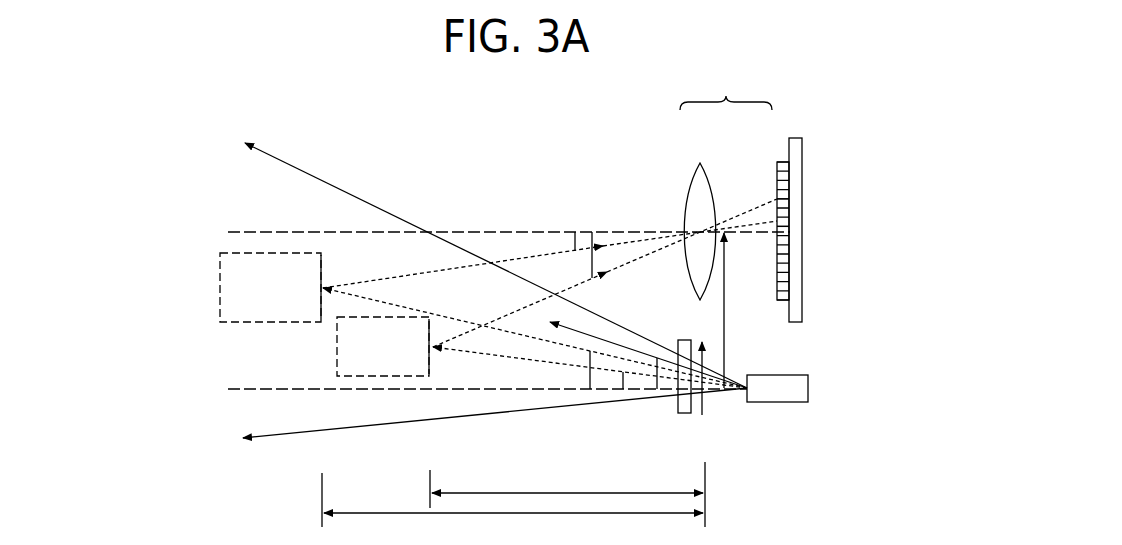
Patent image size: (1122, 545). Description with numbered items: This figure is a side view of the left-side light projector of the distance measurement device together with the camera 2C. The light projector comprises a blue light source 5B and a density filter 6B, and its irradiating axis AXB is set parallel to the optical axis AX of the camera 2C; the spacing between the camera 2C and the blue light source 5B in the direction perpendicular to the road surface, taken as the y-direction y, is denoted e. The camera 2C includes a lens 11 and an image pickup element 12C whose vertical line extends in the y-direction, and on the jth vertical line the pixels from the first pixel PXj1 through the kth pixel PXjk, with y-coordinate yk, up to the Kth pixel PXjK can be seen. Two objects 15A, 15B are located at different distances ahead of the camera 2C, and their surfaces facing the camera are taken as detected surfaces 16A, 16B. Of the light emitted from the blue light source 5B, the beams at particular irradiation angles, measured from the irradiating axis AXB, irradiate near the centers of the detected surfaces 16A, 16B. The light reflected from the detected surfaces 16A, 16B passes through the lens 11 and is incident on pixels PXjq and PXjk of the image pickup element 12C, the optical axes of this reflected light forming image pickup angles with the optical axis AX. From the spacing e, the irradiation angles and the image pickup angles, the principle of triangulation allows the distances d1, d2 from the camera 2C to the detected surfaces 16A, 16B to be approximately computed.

The camera 2C is at (726, 90).
The lens 11 is at (700, 163).
The image pickup element 12C is at (789, 150).
The object 15A is at (337, 348).
The object 15B is at (220, 290).
The detected surface 16A is at (431, 363).
The detected surface 16B is at (322, 265).
The blue light source 5B is at (780, 402).
The density filter 6B is at (685, 413).
The pixel PXjK is at (806, 163).
The pixel PXjq is at (806, 197).
The pixel PXjk is at (806, 228).
The pixel PXj1 is at (806, 292).
The optical axis AX is at (483, 232).
The irradiating axis AXB is at (258, 391).
The spacing e is at (734, 310).
The y-direction y is at (705, 363).
The distance d1 is at (567, 494).
The distance d2 is at (512, 500).